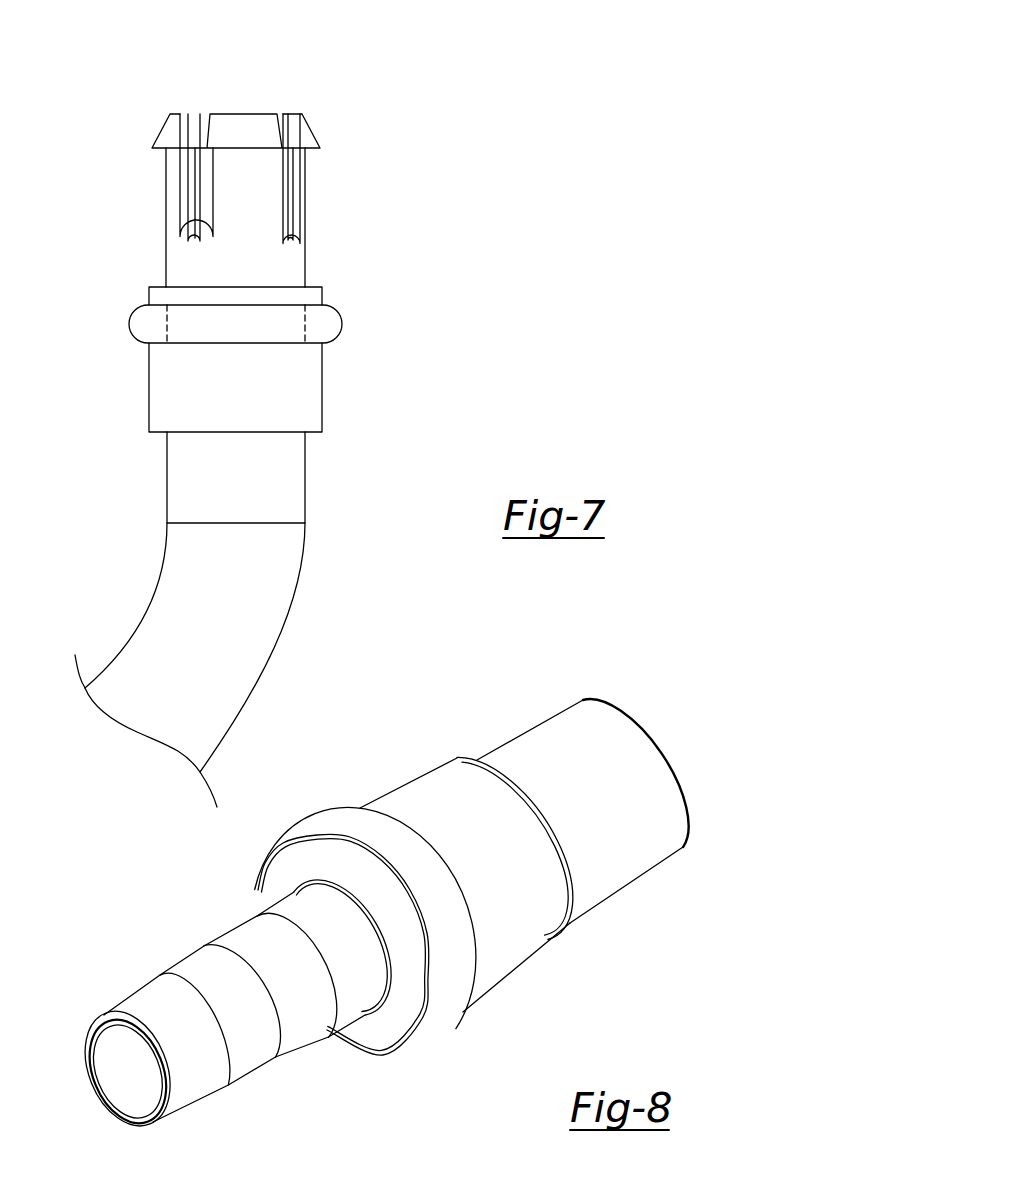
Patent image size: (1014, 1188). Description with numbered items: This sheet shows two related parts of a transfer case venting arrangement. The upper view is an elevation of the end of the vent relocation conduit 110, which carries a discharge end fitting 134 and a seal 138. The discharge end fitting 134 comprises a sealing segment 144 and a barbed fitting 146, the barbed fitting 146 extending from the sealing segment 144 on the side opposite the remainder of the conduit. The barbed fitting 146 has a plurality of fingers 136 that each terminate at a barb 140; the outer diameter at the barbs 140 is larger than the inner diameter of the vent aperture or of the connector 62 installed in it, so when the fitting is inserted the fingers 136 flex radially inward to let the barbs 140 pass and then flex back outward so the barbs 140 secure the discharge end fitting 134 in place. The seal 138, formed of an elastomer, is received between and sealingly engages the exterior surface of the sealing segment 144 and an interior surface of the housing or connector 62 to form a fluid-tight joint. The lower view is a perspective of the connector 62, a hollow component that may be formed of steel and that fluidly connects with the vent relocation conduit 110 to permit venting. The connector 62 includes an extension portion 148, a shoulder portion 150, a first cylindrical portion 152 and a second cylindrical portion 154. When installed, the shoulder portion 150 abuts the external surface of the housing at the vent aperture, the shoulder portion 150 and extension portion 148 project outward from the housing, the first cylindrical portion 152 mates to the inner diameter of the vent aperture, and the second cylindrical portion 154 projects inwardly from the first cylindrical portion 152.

In FIG. 7, the vent relocation conduit 110 is at (307, 583).
In FIG. 7, the discharge end fitting 134 is at (150, 203).
In FIG. 7, the fingers 136 is at (172, 167).
In FIG. 7, the seal 138 is at (327, 318).
In FIG. 7, the barbs 140 is at (170, 132).
In FIG. 7, the sealing segment 144 is at (315, 390).
In FIG. 7, the barbed fitting 146 is at (287, 270).
In FIG. 8, the connector 62 is at (712, 768).
In FIG. 8, the extension portion 148 is at (263, 1058).
In FIG. 8, the shoulder portion 150 is at (443, 1010).
In FIG. 8, the first cylindrical portion 152 is at (517, 955).
In FIG. 8, the second cylindrical portion 154 is at (623, 873).